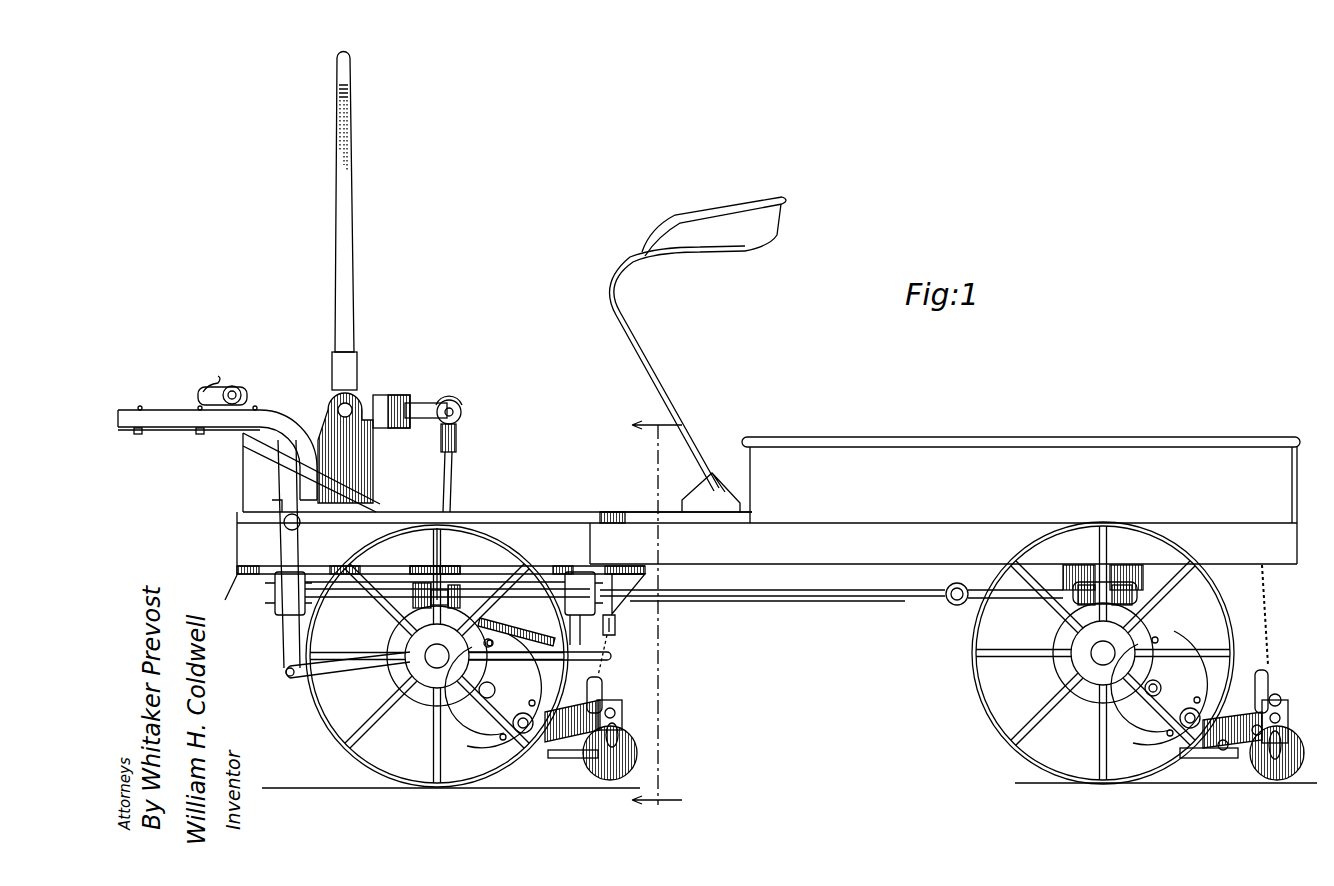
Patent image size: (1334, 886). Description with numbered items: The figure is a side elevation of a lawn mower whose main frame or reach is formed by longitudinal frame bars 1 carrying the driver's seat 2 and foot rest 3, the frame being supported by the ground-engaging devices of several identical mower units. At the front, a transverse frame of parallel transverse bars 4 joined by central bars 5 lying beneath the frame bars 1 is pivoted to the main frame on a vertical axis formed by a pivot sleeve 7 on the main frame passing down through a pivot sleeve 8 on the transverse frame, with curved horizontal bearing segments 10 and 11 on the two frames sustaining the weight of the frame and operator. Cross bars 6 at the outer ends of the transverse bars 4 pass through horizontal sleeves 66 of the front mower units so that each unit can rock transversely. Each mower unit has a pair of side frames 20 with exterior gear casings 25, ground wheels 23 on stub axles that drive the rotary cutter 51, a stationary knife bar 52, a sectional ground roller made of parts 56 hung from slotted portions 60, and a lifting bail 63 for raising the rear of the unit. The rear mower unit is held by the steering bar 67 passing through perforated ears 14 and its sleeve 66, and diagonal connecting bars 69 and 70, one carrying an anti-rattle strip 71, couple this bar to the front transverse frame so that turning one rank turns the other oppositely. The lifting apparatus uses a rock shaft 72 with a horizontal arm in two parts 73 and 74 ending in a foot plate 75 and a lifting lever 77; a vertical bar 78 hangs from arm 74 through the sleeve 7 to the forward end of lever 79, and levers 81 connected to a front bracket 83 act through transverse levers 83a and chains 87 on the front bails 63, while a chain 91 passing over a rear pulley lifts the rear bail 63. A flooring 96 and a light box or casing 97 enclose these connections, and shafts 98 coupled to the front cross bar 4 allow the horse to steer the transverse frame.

The longitudinal frame bar 1 is at (767, 511).
The driver's seat 2 is at (705, 240).
The foot rest 3 is at (383, 490).
The transverse bar 4 is at (232, 625).
The central bar 5 is at (340, 598).
The cross bar 6 is at (522, 590).
The pivot sleeve 7 is at (453, 568).
The pivot sleeve 8 is at (455, 575).
The horizontal bearing segment 10 is at (237, 567).
The horizontal bearing segment 11 is at (422, 593).
The perforated ear 14 is at (1060, 600).
The side frame 20 is at (578, 740).
The ground wheel 23 is at (385, 780).
The gear casing 25 is at (475, 720).
The rotary cutter 51 is at (540, 698).
The stationary knife bar 52 is at (1215, 760).
The ground roller part 56 is at (603, 780).
The slotted portion 60 is at (1272, 702).
The lifting bail 63 is at (604, 695).
The horizontal sleeve 66 is at (420, 585).
The steering bar 67 is at (1012, 600).
The diagonal connecting bar 69 is at (812, 598).
The diagonal connecting bar 70 is at (942, 600).
The strip 71 is at (868, 603).
The rock shaft 72 is at (350, 404).
The horizontal arm part 73 is at (395, 400).
The horizontal arm part 74 is at (425, 410).
The foot plate 75 is at (458, 406).
The lifting lever 77 is at (348, 265).
The vertical bar 78 is at (452, 475).
The lever 79 is at (530, 645).
The lever 81 is at (355, 672).
The front bracket 83 is at (290, 660).
The transversely disposed lever 83a is at (616, 625).
The chain 87 is at (606, 662).
The chain 91 is at (1272, 597).
The flooring 96 is at (512, 515).
The light box or casing 97 is at (925, 455).
The shafts 98 is at (145, 410).